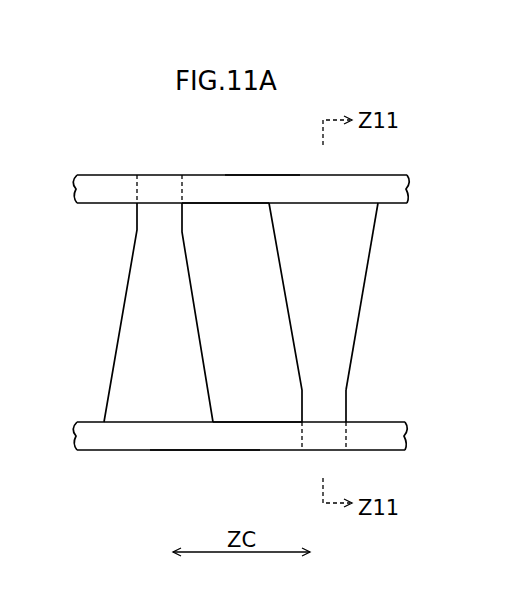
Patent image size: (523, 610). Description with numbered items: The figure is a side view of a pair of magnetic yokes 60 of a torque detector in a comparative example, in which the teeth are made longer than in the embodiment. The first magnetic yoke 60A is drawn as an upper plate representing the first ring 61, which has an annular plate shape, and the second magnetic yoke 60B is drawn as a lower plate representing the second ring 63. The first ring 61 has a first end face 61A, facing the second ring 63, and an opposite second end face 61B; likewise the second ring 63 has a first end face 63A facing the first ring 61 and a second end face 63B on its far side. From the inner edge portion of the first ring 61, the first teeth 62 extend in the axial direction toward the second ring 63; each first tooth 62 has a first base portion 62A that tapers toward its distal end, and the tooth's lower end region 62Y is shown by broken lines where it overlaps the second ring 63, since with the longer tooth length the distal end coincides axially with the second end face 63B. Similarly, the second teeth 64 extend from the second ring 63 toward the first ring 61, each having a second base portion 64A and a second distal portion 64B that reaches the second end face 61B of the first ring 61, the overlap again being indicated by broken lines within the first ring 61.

The magnetic yokes 60 is at (86, 161).
The first magnetic yoke 60A is at (408, 186).
The second magnetic yoke 60B is at (406, 433).
The first ring 61 is at (242, 280).
The first end face of the first ring 61A is at (228, 204).
The second end face of the first ring 61B is at (273, 175).
The first teeth 62 is at (352, 348).
The first base portion 62A is at (367, 253).
The joint region of second leg in lower plate 62Y is at (317, 452).
The second ring 63 is at (226, 439).
The first end face of the second ring 63A is at (258, 421).
The second end face of the second ring 63B is at (178, 452).
The second teeth 64 is at (135, 280).
The second base portion 64A is at (118, 370).
The second distal portion 64B is at (160, 182).